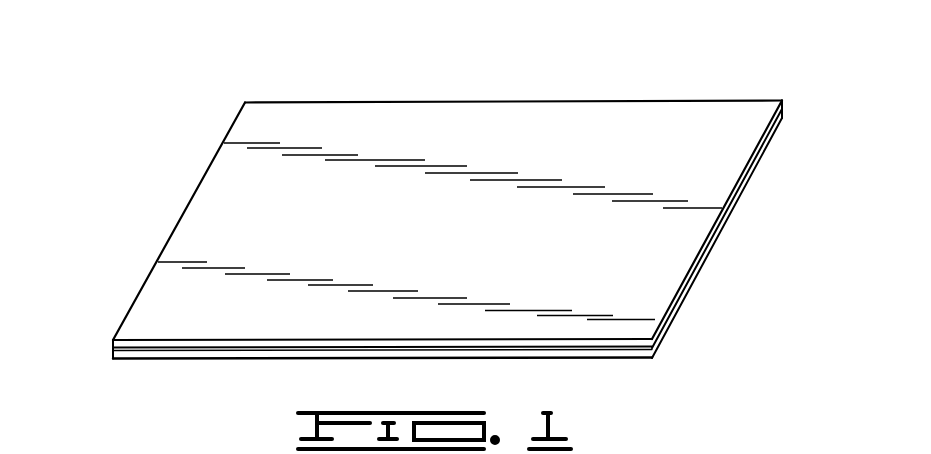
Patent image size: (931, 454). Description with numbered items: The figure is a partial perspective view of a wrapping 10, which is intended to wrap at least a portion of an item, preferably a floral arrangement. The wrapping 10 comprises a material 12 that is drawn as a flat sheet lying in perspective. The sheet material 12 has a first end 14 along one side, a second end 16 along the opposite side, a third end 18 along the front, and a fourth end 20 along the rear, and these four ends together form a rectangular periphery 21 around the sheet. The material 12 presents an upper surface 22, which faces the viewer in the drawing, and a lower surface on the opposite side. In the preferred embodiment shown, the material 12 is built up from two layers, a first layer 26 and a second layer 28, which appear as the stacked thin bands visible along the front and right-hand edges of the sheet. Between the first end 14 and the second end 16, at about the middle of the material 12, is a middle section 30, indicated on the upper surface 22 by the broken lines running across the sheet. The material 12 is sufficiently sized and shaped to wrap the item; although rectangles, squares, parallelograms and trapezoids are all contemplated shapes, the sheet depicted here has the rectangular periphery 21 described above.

The wrapping 10 is at (408, 219).
The material 12 is at (326, 98).
The first end 14 is at (190, 201).
The second end 16 is at (713, 230).
The third end 18 is at (336, 237).
The fourth end 20 is at (437, 182).
The rectangular periphery 21 is at (106, 341).
The upper surface 22 is at (520, 125).
The first layer 26 is at (188, 345).
The second layer 28 is at (232, 357).
The middle section 30 is at (460, 155).